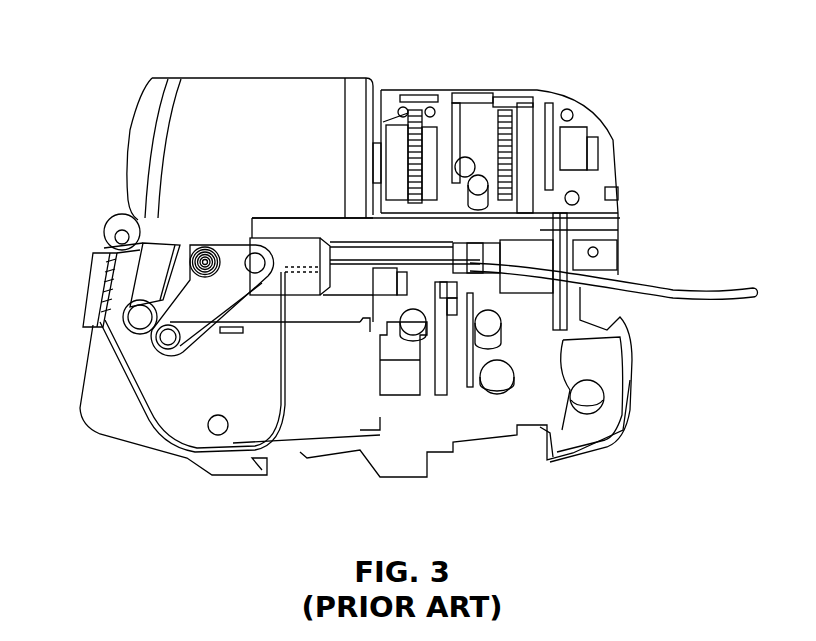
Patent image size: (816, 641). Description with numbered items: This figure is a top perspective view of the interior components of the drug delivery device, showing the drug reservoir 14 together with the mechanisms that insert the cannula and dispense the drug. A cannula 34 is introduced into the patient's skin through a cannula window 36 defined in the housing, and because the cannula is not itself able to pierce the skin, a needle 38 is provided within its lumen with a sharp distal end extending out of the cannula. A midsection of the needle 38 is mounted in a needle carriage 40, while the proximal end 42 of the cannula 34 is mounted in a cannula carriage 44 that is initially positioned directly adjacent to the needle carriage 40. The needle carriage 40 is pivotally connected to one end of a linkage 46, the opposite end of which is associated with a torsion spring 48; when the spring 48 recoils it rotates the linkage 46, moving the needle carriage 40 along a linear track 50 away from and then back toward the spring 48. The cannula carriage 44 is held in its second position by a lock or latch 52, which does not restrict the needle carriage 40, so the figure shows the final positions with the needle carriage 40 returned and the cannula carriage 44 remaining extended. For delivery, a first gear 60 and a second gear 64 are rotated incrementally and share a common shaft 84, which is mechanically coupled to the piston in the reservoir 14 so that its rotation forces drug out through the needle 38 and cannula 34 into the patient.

The reservoir 14 is at (217, 110).
The needle carriage 40 is at (292, 248).
The first gear 60 is at (415, 110).
The shaft 84 is at (475, 150).
The second gear 64 is at (507, 108).
The torsion spring 48 is at (192, 245).
The linkage 46 is at (177, 296).
The cannula carriage 44 is at (545, 225).
The cannula 34 is at (717, 288).
The cannula window 36 is at (612, 320).
The needle 38 is at (270, 412).
The linear track 50 is at (418, 297).
The lock or latch 52 is at (448, 380).
The proximal end of the cannula 42 is at (470, 250).